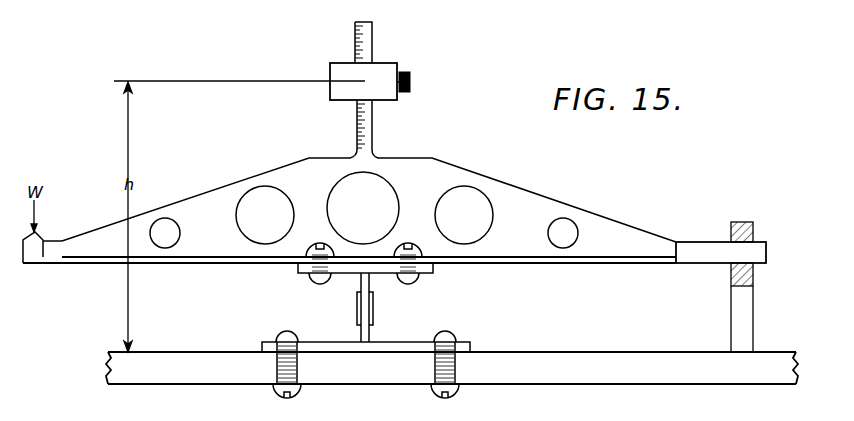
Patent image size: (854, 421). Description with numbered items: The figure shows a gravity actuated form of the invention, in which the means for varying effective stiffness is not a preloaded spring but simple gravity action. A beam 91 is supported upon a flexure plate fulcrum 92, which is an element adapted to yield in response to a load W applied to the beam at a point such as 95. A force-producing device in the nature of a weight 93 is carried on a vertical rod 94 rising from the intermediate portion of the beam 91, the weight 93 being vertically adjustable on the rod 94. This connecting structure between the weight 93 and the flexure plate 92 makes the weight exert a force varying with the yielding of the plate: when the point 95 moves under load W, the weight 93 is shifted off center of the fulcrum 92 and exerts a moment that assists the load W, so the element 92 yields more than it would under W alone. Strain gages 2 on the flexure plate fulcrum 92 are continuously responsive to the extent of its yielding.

The strain gages 2 is at (357, 305).
The beam 91 is at (437, 264).
The flexure plate fulcrum 92 is at (370, 336).
The weight 93 is at (386, 68).
The vertical rod 94 is at (373, 36).
The point of load application 95 is at (40, 232).